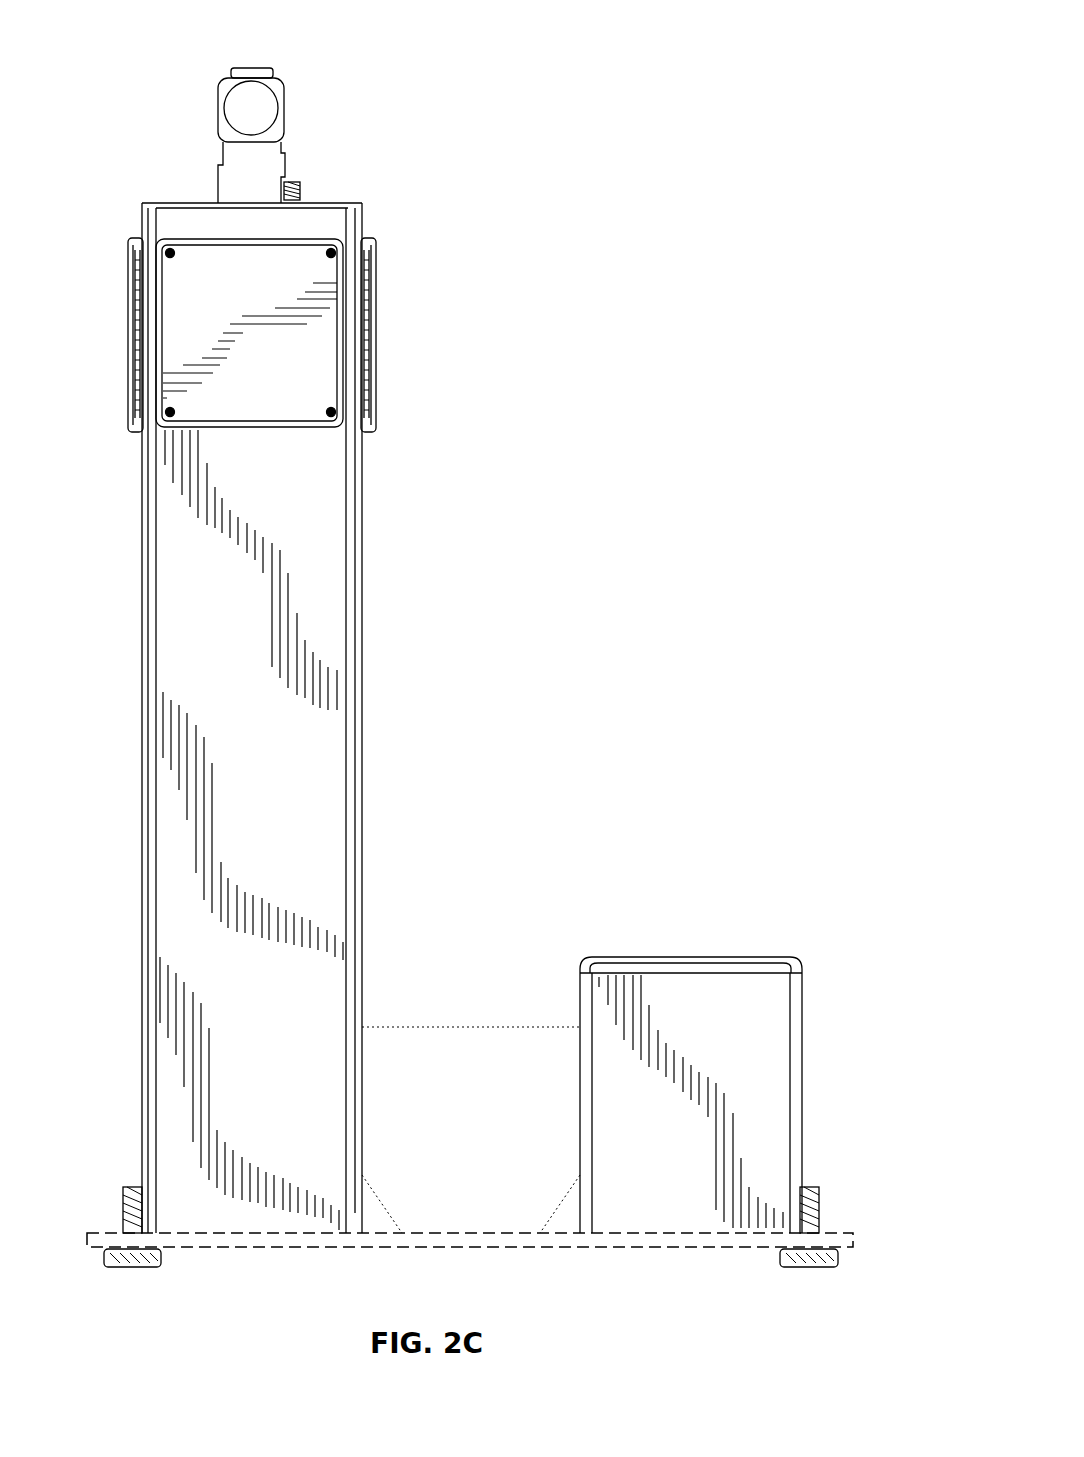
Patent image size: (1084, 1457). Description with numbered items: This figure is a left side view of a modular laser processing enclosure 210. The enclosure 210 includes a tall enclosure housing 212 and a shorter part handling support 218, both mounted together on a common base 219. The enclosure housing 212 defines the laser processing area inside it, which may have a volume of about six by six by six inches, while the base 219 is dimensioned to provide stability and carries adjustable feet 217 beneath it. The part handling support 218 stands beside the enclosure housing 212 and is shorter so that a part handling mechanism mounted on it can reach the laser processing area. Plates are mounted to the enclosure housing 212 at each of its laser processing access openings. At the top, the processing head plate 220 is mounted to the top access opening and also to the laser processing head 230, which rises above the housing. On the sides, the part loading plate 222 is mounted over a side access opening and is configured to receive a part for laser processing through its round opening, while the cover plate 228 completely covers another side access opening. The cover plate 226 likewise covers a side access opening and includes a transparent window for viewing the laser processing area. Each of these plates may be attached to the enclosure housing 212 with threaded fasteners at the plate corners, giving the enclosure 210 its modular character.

The modular laser processing enclosure 210 is at (552, 507).
The enclosure housing 212 is at (362, 848).
The adjustable feet 217 is at (140, 1268).
The part handling support 218 is at (712, 957).
The base 219 is at (830, 1233).
The processing head plate 220 is at (320, 198).
The part loading plate 222 is at (376, 370).
The cover plate 226 is at (275, 426).
The cover plate 228 is at (128, 375).
The laser processing head 230 is at (287, 112).